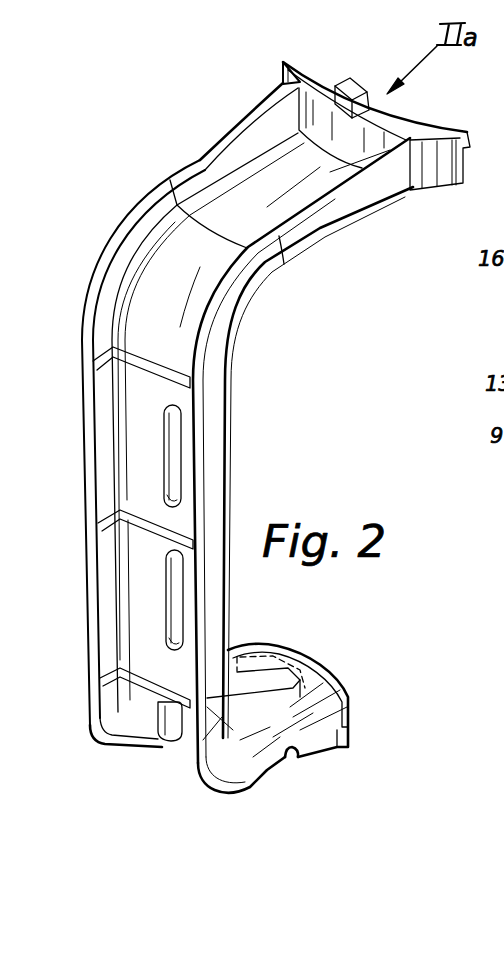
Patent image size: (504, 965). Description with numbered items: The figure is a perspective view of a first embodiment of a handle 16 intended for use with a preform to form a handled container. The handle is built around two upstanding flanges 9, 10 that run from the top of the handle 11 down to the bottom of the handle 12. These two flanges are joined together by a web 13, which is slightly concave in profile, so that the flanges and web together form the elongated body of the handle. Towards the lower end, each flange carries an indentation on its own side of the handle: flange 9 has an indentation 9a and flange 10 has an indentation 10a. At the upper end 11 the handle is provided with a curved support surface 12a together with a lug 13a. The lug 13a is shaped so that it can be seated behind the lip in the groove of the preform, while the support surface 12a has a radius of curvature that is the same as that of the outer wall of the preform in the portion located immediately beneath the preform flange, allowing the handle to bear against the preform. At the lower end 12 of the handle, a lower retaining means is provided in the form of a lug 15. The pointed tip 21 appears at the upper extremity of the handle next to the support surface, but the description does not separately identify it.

The upstanding flange 9 is at (98, 403).
The upstanding flange 10 is at (205, 453).
The top of the handle 11 is at (202, 115).
The bottom of the handle 12 is at (170, 783).
The curved support surface 12a is at (386, 122).
The web 13 is at (140, 468).
The lug 13a is at (352, 86).
The lug 15 is at (297, 657).
The handle 16 is at (112, 182).
The pointed tip 21 is at (298, 62).
The indentation 9a is at (170, 731).
The indentation 10a is at (289, 760).